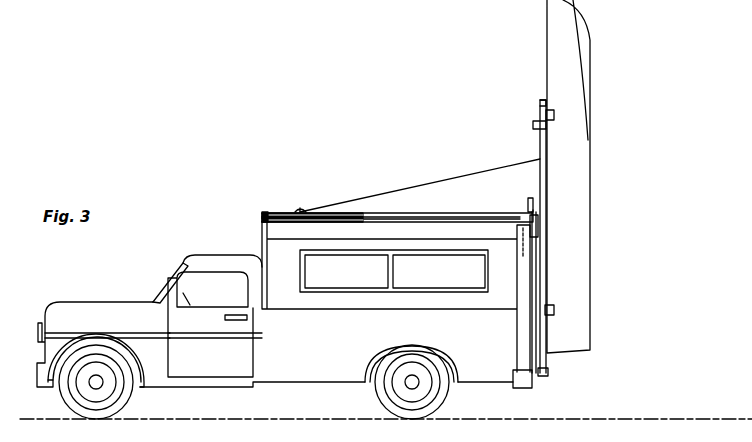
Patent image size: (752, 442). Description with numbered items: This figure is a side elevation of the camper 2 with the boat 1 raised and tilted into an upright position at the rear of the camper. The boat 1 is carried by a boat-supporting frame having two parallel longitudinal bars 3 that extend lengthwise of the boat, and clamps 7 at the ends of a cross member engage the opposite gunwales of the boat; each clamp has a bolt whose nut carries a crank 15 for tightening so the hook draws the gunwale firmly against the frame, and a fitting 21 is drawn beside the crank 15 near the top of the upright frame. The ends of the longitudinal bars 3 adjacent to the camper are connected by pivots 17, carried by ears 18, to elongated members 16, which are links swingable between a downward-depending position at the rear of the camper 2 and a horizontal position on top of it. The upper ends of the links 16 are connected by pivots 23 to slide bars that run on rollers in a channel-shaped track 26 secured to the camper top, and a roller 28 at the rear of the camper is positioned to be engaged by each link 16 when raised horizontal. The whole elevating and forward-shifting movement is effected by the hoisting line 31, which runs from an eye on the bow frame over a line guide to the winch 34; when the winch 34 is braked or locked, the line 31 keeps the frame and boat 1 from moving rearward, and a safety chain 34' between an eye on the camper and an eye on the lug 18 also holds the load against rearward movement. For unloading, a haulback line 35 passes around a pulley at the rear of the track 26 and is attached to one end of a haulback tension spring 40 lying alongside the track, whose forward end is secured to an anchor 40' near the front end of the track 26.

The boat 1 is at (588, 202).
The camper 2 is at (262, 248).
The longitudinal bars 3 is at (540, 148).
The clamps 7 is at (554, 115).
The crank 15 is at (540, 105).
The elongated members 16 is at (546, 277).
The pivots 17 is at (548, 372).
The ears 18 is at (540, 380).
The clamp 21 is at (533, 124).
The pivots 23 is at (530, 206).
The channel-shaped track 26 is at (470, 218).
The roller 28 is at (546, 233).
The hoisting line 31 is at (420, 183).
The hoisting line winch 34 is at (294, 190).
The safety chain 34' is at (553, 244).
The haulback line 35 is at (455, 222).
The haulback tension spring 40 is at (313, 226).
The anchor 40' is at (244, 223).